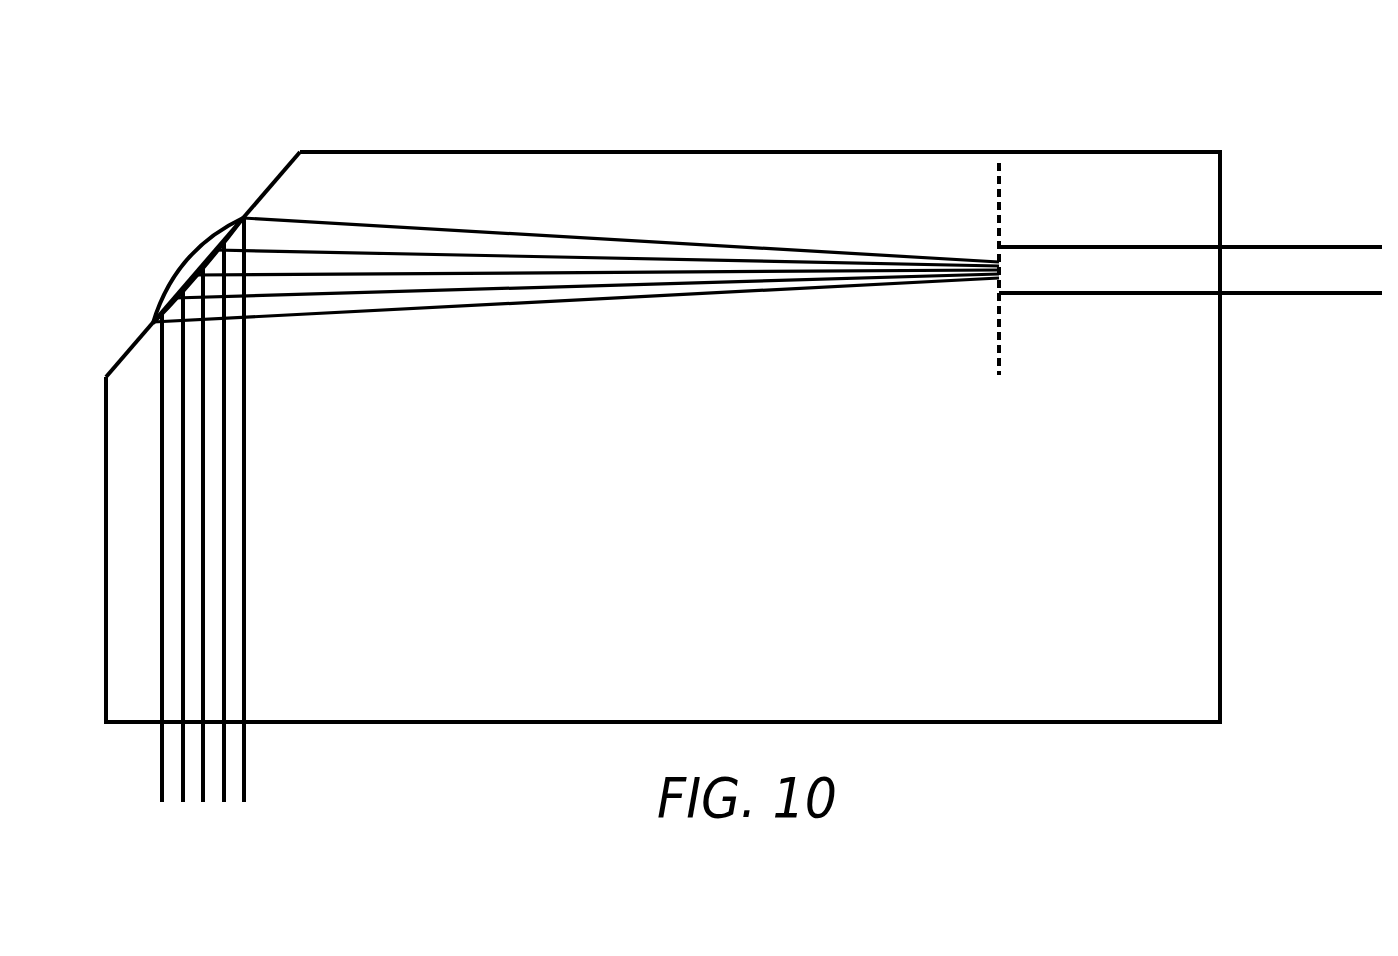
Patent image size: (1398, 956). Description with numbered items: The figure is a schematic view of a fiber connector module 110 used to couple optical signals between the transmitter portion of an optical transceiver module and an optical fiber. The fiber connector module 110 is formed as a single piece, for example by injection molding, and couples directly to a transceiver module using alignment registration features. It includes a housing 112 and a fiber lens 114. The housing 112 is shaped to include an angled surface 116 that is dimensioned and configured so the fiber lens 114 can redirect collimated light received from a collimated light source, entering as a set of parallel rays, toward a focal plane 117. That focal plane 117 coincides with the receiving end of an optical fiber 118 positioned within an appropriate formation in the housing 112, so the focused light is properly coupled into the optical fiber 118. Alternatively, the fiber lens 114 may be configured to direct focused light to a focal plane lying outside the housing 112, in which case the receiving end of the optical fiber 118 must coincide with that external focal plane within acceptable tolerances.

The fiber connector module 110 is at (192, 90).
The housing 112 is at (1188, 618).
The fiber lens 114 is at (190, 262).
The angled surface 116 is at (127, 352).
The focal plane 117 is at (1000, 332).
The optical fiber 118 is at (1298, 277).